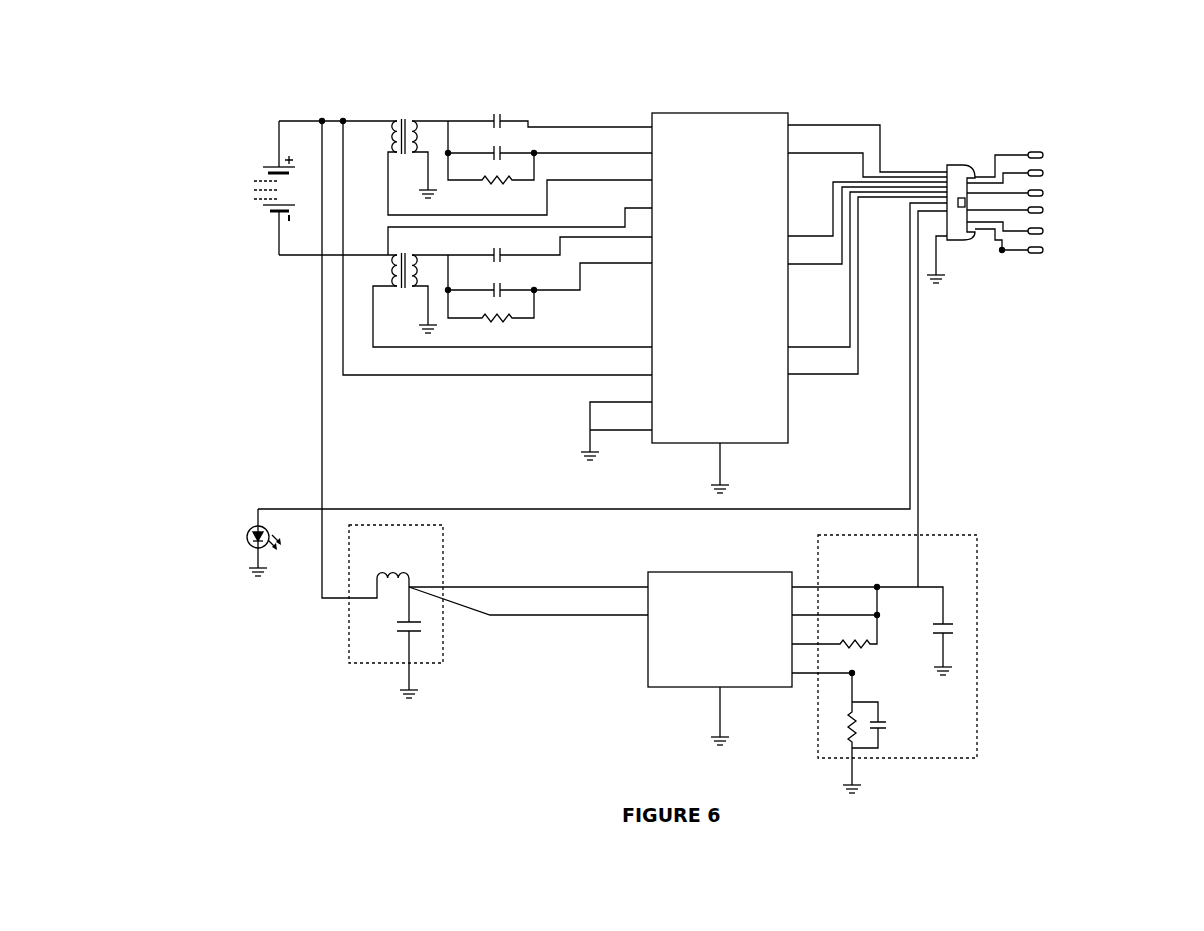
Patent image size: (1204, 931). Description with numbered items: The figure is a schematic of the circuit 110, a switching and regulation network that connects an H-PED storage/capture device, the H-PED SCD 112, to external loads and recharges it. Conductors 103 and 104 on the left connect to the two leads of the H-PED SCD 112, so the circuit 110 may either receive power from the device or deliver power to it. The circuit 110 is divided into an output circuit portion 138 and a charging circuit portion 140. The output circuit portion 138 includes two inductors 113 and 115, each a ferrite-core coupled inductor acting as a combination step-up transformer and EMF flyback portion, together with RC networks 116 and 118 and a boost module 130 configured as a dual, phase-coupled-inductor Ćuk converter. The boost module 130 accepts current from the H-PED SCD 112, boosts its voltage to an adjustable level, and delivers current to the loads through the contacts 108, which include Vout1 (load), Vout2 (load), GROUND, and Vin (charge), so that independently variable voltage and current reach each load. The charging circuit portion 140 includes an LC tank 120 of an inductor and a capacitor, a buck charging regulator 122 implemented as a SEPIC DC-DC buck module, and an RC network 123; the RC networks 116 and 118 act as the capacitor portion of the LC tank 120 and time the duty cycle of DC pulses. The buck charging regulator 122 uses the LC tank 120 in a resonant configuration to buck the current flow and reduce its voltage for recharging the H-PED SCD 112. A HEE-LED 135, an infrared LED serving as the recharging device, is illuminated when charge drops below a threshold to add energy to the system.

The conductor 103 is at (279, 133).
The conductor 104 is at (279, 243).
The contacts 108 is at (1038, 128).
The circuit 110 is at (295, 98).
The H-PED SCD 112 is at (253, 190).
The inductor 113 is at (398, 140).
The inductor 115 is at (397, 272).
The RC network 116 is at (492, 152).
The RC network 118 is at (492, 293).
The LC tank 120 is at (349, 625).
The buck charging regulator 122 is at (648, 680).
The RC network 123 is at (818, 738).
The boost module 130 is at (652, 297).
The HEE-LED 135 is at (256, 548).
The output circuit portion 138 is at (295, 406).
The charging circuit portion 140 is at (974, 488).